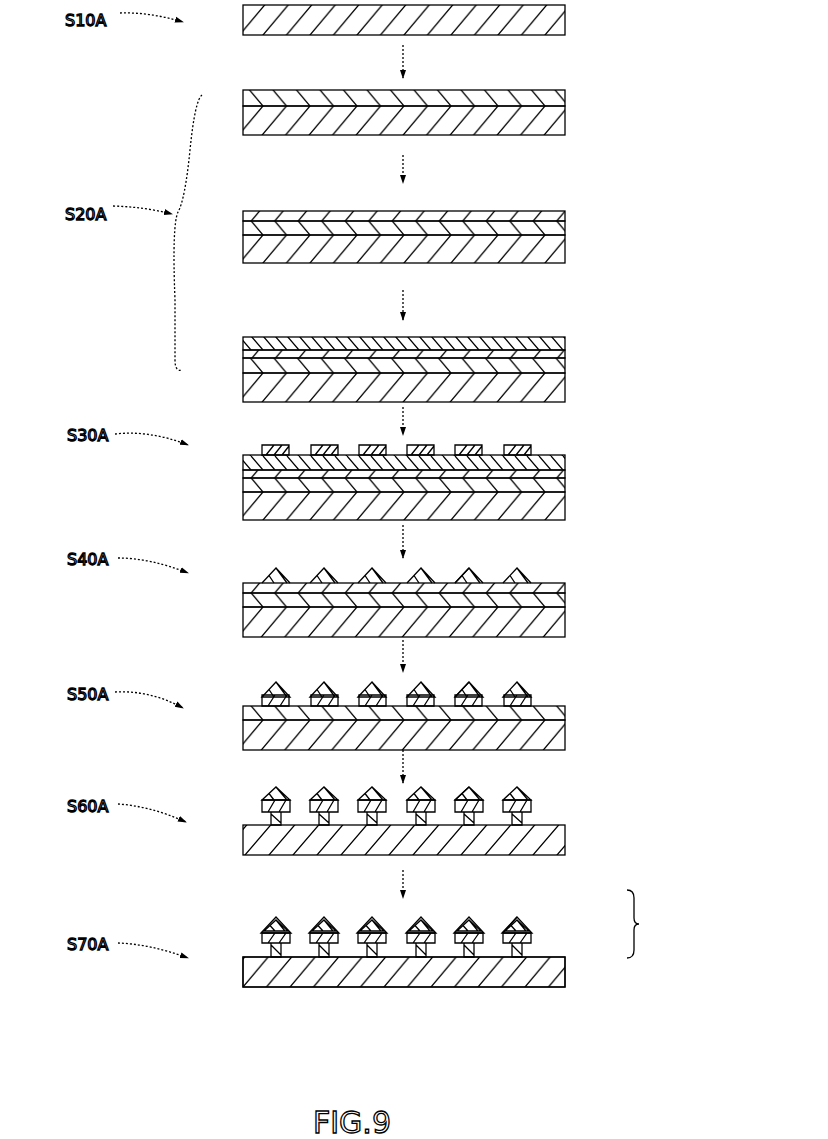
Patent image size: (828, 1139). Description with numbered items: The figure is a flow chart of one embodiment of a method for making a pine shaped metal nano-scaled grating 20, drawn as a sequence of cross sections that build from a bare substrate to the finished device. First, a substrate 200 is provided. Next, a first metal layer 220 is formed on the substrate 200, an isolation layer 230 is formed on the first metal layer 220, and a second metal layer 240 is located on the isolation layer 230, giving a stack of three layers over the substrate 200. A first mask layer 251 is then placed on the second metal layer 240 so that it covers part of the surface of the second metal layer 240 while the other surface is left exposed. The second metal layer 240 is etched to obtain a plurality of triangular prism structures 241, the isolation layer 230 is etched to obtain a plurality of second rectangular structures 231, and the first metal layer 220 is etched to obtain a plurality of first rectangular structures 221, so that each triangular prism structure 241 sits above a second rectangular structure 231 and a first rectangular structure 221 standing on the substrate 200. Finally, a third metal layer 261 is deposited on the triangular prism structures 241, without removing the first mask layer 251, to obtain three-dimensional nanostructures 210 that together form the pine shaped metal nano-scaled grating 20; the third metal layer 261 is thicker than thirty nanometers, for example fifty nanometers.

The substrate 200 is at (466, 128).
The first metal layer 220 is at (466, 93).
The isolation layer 230 is at (432, 215).
The second metal layer 240 is at (453, 340).
The first mask layer 251 is at (263, 447).
The triangular prism structures 241 is at (527, 580).
The second rectangular structures 231 is at (540, 703).
The first rectangular structures 221 is at (535, 817).
The third metal layer 261 is at (528, 923).
The three-dimensional nanostructures 210 is at (650, 924).
The pine shaped metal nano-scaled grating 20 is at (352, 1005).